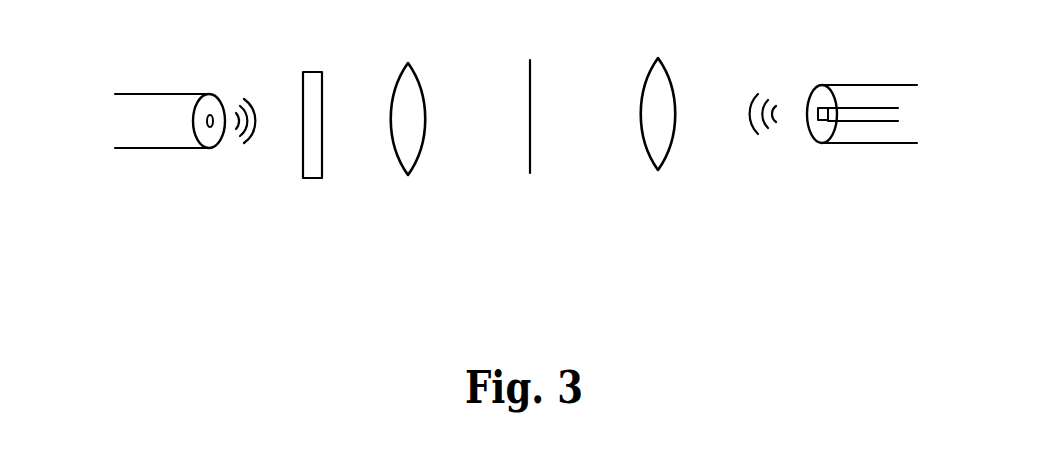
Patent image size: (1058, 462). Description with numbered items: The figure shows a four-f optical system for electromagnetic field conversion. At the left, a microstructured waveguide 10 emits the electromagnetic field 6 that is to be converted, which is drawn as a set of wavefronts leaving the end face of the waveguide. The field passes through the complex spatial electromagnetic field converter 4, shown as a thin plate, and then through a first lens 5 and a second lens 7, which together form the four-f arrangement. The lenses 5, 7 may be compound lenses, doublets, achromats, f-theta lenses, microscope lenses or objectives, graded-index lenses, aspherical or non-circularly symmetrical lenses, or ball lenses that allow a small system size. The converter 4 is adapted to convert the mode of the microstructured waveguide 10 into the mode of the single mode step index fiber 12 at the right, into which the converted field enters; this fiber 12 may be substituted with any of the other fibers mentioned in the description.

The microstructured waveguide 10 is at (163, 133).
The electromagnetic field 6 is at (238, 95).
The complex spatial electromagnetic field converter 4 is at (308, 165).
The lens 5 is at (412, 157).
The lens 7 is at (662, 153).
The single mode step index fiber 12 is at (860, 133).